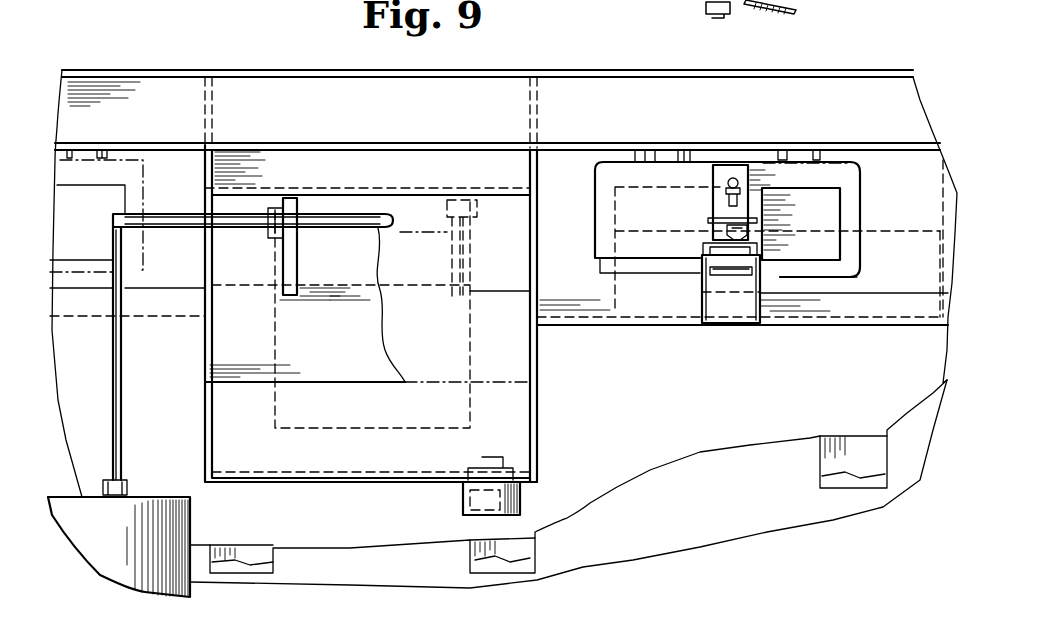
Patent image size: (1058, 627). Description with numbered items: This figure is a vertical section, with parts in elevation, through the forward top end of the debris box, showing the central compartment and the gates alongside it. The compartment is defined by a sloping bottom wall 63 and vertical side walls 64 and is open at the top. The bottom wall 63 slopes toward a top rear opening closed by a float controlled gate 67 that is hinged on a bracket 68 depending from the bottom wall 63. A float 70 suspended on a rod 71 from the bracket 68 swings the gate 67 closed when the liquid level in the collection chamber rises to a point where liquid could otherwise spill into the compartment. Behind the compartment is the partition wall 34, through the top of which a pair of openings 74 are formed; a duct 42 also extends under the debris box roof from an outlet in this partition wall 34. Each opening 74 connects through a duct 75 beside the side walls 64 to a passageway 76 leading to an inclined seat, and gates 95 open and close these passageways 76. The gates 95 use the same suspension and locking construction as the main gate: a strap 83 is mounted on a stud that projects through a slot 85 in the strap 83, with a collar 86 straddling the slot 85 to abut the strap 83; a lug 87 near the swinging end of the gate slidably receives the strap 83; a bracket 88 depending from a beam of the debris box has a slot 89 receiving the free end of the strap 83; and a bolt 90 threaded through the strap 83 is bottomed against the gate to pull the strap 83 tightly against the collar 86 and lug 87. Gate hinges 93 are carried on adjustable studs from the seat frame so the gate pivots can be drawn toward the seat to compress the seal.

The partition wall 34 is at (680, 427).
The duct 42 is at (470, 357).
The bottom wall 63 is at (372, 482).
The side walls 64 is at (537, 447).
The float controlled gate 67 is at (357, 354).
The bracket 68 is at (297, 245).
The float 70 is at (190, 517).
The rod 71 is at (121, 416).
The openings 74 is at (893, 232).
The duct 75 is at (90, 318).
The passageway 76 is at (835, 212).
The strap 83 is at (740, 172).
The slot 85 is at (727, 200).
The collar 86 is at (742, 186).
The lug 87 is at (760, 250).
The bracket 88 is at (748, 308).
The slot 89 is at (715, 277).
The bolt 90 is at (752, 228).
The gate hinges 93 is at (652, 162).
The gates 95 is at (143, 160).